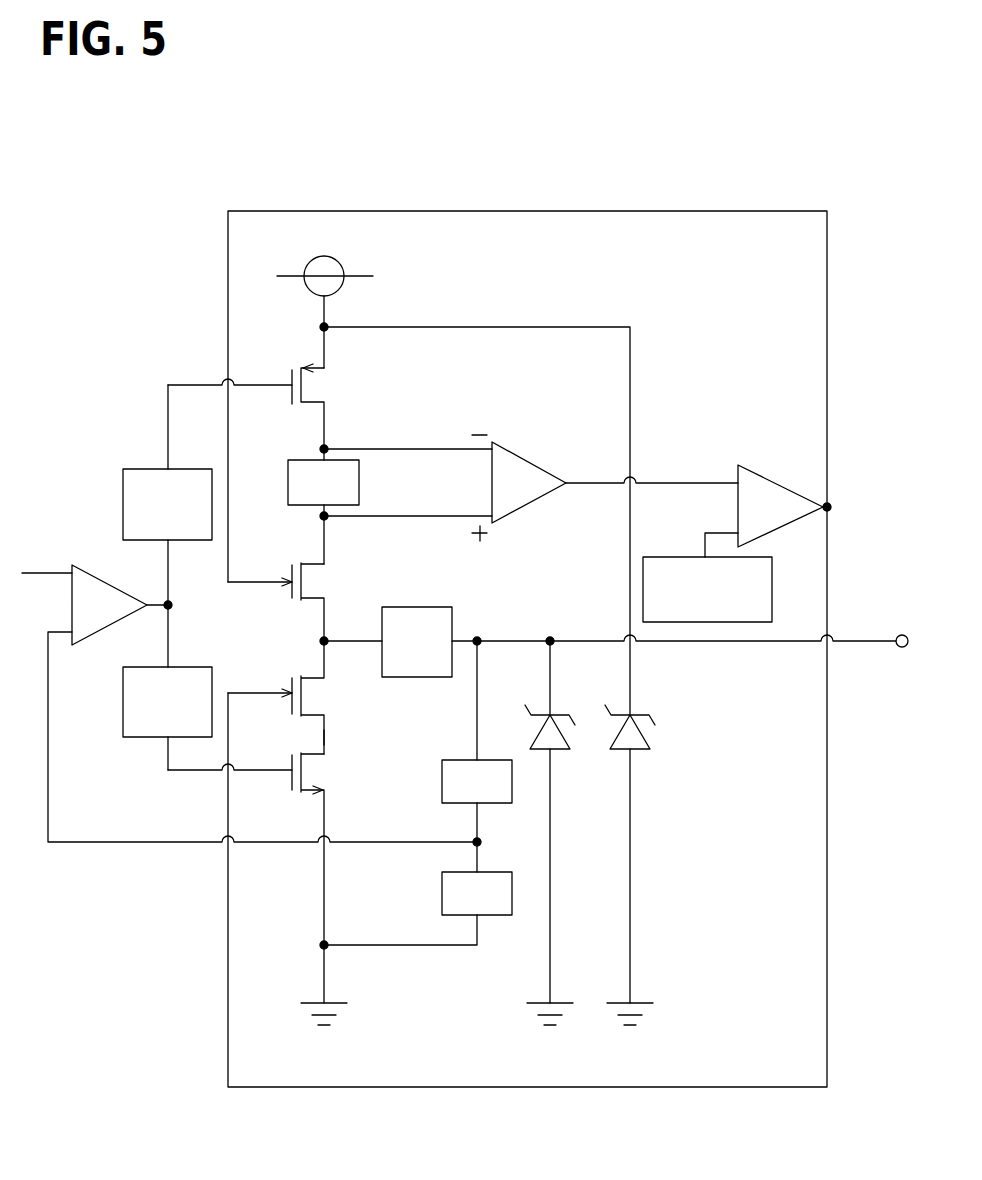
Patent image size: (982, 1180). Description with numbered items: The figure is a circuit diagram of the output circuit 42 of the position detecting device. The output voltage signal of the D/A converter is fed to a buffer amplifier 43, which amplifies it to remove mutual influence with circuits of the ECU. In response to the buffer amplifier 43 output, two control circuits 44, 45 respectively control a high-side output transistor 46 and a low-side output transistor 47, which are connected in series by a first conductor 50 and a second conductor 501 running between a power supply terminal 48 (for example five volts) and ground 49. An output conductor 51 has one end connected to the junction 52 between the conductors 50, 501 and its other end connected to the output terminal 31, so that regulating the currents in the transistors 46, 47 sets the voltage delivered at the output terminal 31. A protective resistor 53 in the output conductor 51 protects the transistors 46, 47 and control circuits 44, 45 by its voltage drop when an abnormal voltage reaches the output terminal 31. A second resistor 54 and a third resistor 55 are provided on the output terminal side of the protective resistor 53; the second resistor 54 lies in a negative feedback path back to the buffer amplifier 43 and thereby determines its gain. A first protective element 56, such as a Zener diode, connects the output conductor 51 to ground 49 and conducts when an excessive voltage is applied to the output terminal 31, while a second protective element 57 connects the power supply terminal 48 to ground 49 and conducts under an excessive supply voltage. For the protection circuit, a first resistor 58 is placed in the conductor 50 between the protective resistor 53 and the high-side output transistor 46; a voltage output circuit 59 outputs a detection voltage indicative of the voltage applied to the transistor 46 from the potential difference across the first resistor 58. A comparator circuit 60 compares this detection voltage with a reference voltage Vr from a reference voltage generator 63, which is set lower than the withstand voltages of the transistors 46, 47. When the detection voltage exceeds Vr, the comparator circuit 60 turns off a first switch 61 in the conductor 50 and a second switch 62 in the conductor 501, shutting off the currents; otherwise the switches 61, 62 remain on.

The output circuit 42 is at (175, 212).
The power supply terminal 48 is at (339, 263).
The high-side output transistor 46 is at (290, 376).
The first conductor 50 is at (326, 430).
The first resistor 58 is at (288, 483).
The voltage output circuit 59 is at (518, 456).
The comparator circuit 60 is at (765, 478).
The reference voltage generator 63 is at (660, 557).
The buffer amplifier 43 is at (88, 569).
The control circuit 44 is at (123, 478).
The control circuit 45 is at (123, 704).
The first switch 61 is at (290, 570).
The junction 52 is at (320, 641).
The protective resistor 53 is at (412, 607).
The output conductor 51 is at (513, 641).
The output terminal 31 is at (902, 650).
The second switch 62 is at (290, 712).
The second conductor 501 is at (326, 741).
The low-side output transistor 47 is at (291, 790).
The second resistor 54 is at (442, 782).
The third resistor 55 is at (442, 894).
The first protective element 56 is at (533, 738).
The second protective element 57 is at (648, 738).
The ground 49 is at (311, 1003).